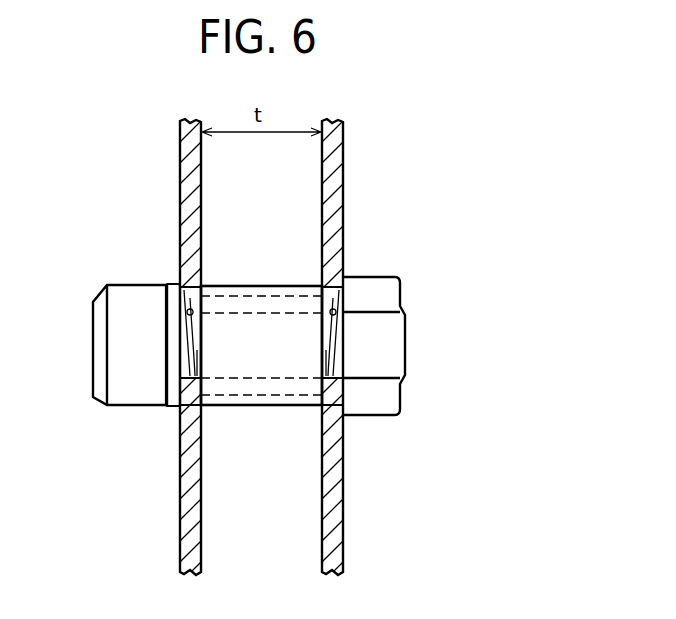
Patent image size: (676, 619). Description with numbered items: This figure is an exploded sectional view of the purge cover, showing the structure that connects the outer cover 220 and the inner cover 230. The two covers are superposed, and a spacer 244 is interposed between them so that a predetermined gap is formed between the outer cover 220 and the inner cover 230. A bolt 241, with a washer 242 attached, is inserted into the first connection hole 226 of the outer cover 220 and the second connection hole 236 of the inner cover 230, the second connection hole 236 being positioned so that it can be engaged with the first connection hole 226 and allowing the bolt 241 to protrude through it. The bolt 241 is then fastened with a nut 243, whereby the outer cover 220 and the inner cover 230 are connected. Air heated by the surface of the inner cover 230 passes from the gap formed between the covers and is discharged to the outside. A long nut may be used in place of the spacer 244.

The outer cover 220 is at (187, 160).
The inner cover 230 is at (345, 158).
The first connection hole 226 is at (188, 305).
The second connection hole 236 is at (334, 305).
The bolt 241 is at (123, 388).
The washer 242 is at (172, 408).
The nut 243 is at (395, 397).
The spacer 244 is at (257, 408).